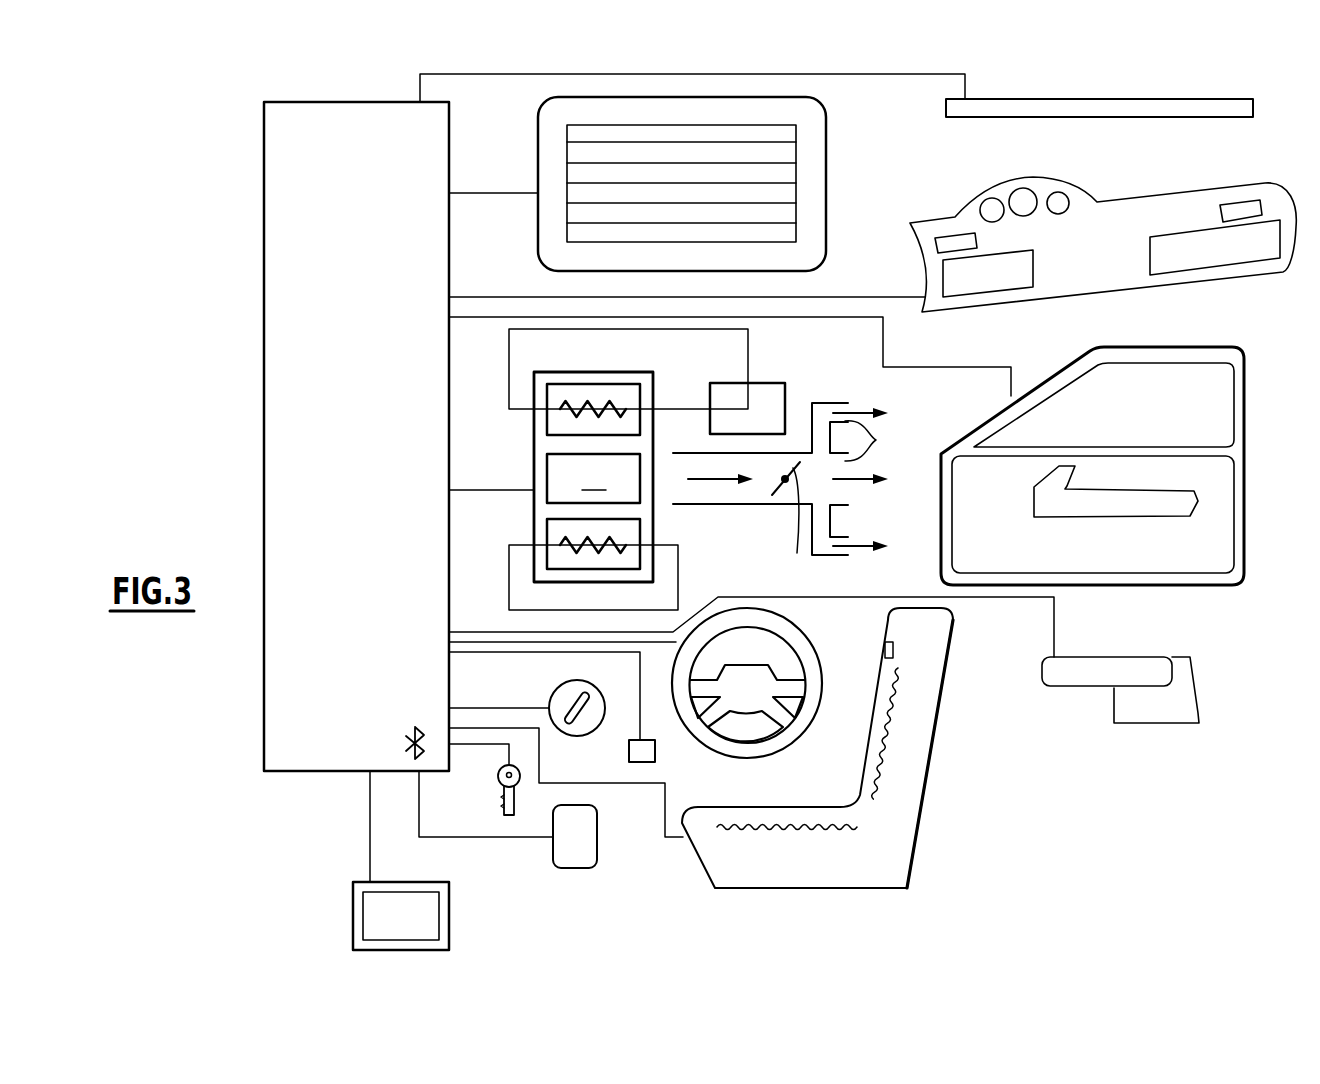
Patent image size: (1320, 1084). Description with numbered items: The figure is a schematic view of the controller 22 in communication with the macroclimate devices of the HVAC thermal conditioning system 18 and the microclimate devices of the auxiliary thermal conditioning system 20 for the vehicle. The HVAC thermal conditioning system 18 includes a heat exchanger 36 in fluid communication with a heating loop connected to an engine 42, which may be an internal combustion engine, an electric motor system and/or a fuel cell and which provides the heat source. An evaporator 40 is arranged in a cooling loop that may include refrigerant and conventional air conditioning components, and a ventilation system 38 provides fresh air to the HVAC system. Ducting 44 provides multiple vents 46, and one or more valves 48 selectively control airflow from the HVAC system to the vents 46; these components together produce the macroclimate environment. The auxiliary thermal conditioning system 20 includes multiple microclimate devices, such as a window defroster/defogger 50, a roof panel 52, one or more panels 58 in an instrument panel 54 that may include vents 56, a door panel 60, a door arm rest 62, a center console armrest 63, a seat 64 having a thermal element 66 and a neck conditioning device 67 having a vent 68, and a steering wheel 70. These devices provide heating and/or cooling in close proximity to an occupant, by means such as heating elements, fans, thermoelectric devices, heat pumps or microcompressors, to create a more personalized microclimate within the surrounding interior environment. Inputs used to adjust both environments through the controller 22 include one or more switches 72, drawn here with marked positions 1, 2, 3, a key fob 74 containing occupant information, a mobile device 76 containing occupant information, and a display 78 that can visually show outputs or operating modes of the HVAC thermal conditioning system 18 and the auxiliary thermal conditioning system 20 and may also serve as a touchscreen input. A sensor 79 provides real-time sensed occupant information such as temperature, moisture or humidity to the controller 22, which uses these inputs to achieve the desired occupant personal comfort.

The HVAC thermal conditioning system 18 is at (528, 465).
The auxiliary thermal conditioning system 20 is at (1160, 766).
The controller 22 is at (263, 260).
The heat exchanger 36 is at (605, 384).
The ventilation system 38 is at (593, 478).
The evaporator 40 is at (640, 530).
The engine 42 is at (770, 383).
The ducting 44 is at (780, 518).
The vents 46 is at (876, 440).
The valves 48 is at (797, 553).
The window defroster/defogger 50 is at (797, 185).
The roof panel 52 is at (1118, 100).
The instrument panel 54 is at (1120, 210).
The vents 56 is at (951, 237).
The panels 58 is at (1160, 253).
The door panel 60 is at (1165, 556).
The door arm rest 62 is at (1104, 507).
The center console armrest 63 is at (1080, 668).
The seat 64 is at (952, 744).
The thermal element 66 is at (820, 826).
The neck conditioning device 67 is at (906, 640).
The vent 68 is at (903, 655).
The steering wheel 70 is at (787, 735).
The switches 72 is at (578, 714).
The key fob 74 is at (498, 784).
The mobile device 76 is at (590, 852).
The display 78 is at (430, 916).
The sensor 79 is at (655, 752).
The ignition switch position 1 is at (545, 689).
The ignition switch position 2 is at (577, 664).
The ignition switch position 3 is at (611, 684).